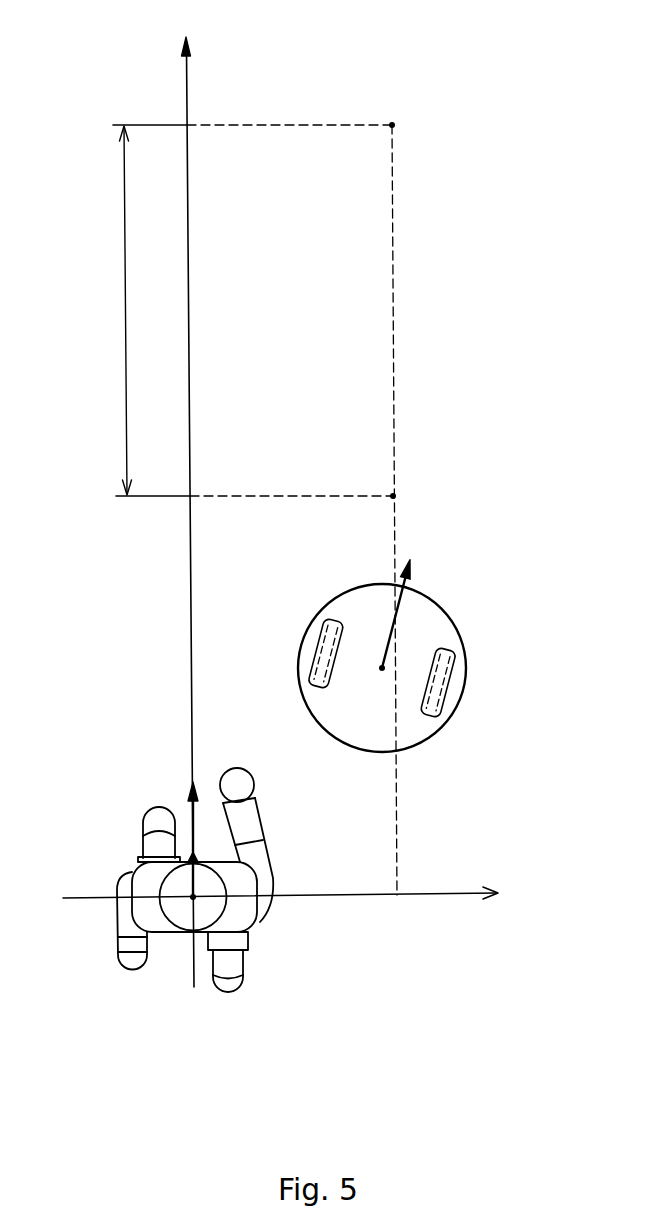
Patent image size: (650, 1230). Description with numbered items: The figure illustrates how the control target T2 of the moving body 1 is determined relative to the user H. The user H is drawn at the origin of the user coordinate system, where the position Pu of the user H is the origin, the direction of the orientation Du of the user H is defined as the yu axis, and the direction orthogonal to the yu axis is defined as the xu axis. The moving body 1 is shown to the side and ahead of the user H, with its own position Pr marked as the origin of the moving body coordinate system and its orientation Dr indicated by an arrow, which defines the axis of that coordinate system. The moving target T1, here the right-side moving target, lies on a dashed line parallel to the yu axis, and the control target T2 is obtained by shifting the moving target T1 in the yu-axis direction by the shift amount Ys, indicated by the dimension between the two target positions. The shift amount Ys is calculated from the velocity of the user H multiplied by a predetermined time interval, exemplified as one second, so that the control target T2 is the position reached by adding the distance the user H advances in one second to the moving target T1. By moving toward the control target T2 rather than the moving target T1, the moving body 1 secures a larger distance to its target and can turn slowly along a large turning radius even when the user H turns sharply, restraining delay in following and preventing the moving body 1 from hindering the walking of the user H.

The moving body 1 is at (423, 635).
The user H is at (162, 923).
The position of the user Pu is at (193, 899).
The orientation of the user Du is at (188, 808).
The position of the moving body Pr is at (382, 668).
The orientation of the moving body Dr is at (399, 598).
The moving target T1 is at (395, 494).
The control target T2 is at (392, 122).
The shift amount Ys is at (108, 310).
The xu axis xu is at (294, 896).
The yu axis yu is at (185, 498).